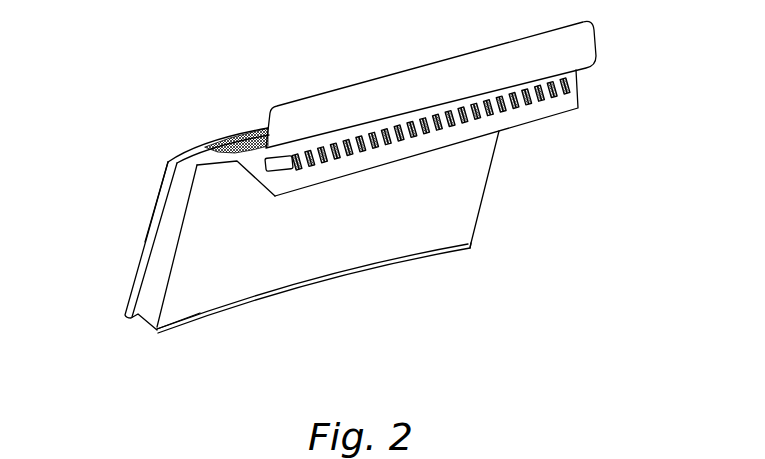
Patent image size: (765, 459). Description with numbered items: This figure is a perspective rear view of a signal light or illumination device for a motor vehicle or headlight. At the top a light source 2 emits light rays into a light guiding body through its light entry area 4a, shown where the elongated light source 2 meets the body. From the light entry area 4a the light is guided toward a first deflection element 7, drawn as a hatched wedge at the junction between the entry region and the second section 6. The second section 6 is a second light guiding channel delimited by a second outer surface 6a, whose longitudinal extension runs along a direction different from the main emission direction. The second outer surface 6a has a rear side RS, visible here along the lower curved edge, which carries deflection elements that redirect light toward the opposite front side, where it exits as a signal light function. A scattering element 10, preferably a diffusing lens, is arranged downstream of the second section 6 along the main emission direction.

The light source 2 is at (568, 85).
The light entry area 4a is at (255, 160).
The second section 6 is at (150, 300).
The second outer surface 6a is at (172, 328).
The first deflection element 7 is at (210, 147).
The scattering element 10 is at (147, 242).
The rear side RS is at (340, 272).